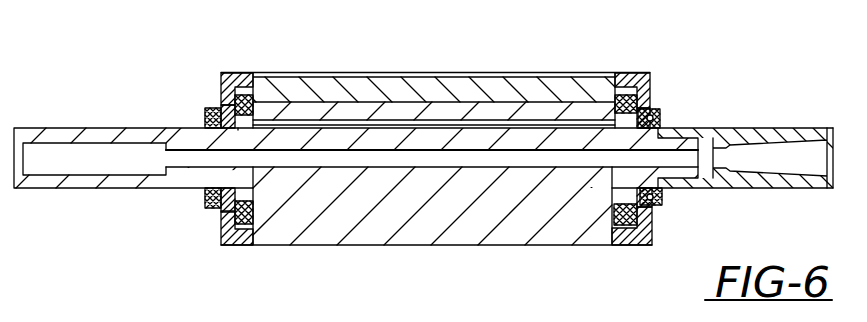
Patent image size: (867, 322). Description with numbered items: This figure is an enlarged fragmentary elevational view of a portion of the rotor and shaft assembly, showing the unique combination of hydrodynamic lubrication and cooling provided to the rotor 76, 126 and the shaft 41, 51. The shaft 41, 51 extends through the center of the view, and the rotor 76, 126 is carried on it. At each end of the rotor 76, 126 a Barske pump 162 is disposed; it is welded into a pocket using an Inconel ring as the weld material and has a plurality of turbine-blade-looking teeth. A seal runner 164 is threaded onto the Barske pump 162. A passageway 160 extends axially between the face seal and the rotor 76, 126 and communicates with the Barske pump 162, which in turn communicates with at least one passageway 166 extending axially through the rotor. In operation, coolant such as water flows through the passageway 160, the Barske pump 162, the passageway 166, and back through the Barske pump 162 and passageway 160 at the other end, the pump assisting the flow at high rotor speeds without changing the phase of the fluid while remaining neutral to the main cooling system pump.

The shaft 41 is at (423, 201).
The shaft 51 is at (183, 182).
The rotor 76 is at (446, 192).
The rotor 126 is at (592, 236).
The passageway 160 is at (238, 128).
The Barske pump 162 is at (219, 115).
The seal runner 164 is at (205, 117).
The passageway 166 is at (540, 122).